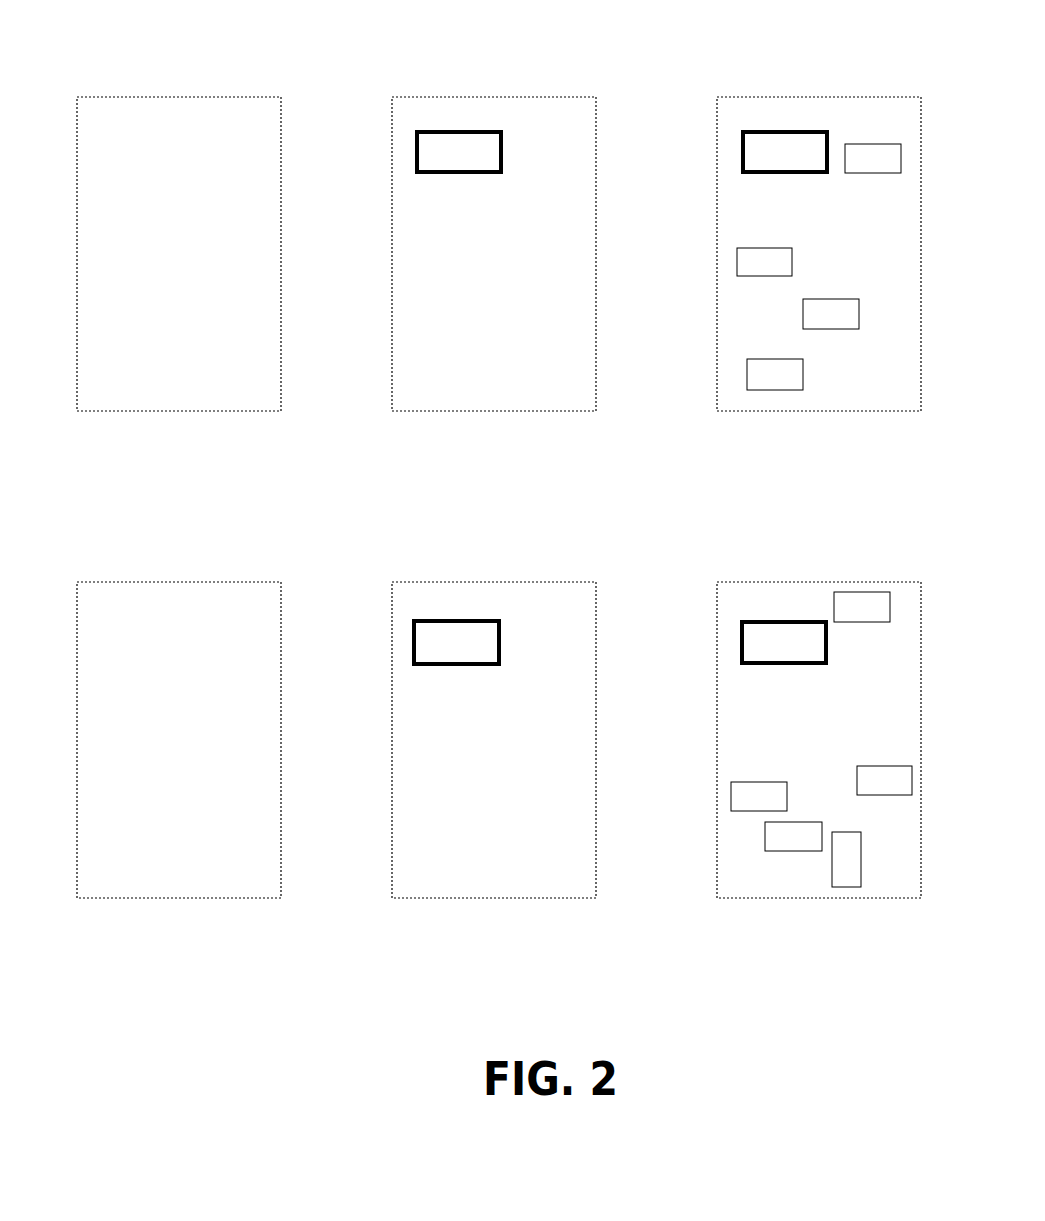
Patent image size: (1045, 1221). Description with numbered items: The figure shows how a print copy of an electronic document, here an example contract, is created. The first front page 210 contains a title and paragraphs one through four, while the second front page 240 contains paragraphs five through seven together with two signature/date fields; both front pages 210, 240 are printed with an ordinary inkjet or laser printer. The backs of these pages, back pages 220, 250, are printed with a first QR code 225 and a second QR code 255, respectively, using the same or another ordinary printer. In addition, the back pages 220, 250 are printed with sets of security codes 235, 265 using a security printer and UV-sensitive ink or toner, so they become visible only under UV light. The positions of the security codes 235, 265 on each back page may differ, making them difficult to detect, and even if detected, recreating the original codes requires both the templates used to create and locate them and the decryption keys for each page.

The Page 1 210 is at (263, 95).
The back page 220 is at (577, 95).
The QR code 1 225 is at (473, 175).
The first set of security codes 235 is at (822, 329).
The Page 2 240 is at (267, 582).
The back page 250 is at (579, 582).
The QR code 2 255 is at (467, 666).
The set of security codes 265 is at (861, 877).